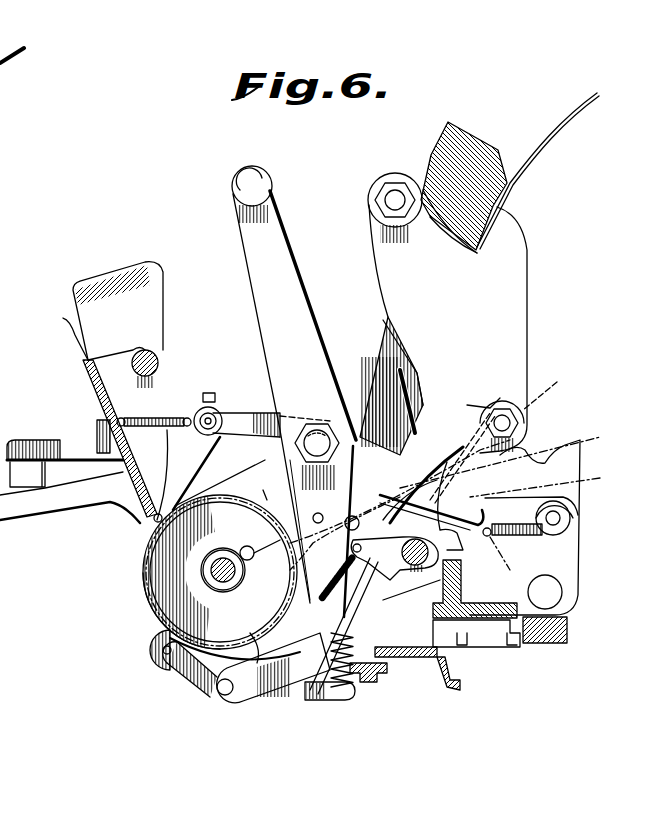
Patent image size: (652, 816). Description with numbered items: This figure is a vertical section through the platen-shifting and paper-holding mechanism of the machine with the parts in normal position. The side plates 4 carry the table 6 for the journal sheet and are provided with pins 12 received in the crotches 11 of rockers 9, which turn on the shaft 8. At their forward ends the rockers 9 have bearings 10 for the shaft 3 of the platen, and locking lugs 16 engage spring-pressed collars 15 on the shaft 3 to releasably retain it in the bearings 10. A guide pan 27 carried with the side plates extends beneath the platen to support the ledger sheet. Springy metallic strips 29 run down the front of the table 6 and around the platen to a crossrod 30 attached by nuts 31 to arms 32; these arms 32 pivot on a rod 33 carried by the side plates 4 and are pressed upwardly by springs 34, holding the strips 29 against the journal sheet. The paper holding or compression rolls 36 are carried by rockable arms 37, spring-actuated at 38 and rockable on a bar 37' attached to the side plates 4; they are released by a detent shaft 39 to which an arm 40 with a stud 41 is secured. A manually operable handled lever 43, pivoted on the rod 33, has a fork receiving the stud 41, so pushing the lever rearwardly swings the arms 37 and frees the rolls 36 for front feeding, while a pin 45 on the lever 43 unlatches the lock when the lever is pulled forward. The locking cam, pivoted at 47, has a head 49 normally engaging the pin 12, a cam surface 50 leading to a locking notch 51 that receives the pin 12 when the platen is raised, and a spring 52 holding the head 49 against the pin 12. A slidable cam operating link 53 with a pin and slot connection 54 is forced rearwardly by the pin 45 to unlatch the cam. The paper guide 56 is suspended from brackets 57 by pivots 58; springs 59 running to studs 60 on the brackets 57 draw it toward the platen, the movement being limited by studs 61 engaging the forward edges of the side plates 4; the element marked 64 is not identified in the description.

The shaft 3 is at (223, 558).
The side plates 4 is at (515, 345).
The table 6 is at (525, 158).
The shaft 8 is at (375, 615).
The rockers 9 is at (428, 447).
The bearings 10 is at (213, 550).
The crotches 11 is at (470, 406).
The pins 12 is at (540, 412).
The spring-pressed collars 15 is at (322, 558).
The locking lugs 16 is at (252, 558).
The guide pan 27 is at (200, 667).
The springy metallic strips 29 is at (280, 461).
The crossrod 30 is at (220, 413).
The nuts 31 is at (246, 436).
The arms 32 is at (272, 415).
The rod 33 is at (320, 430).
The springs 34 is at (279, 530).
The paper holding or compression rolls 36 is at (153, 663).
The rockable arms 37 is at (237, 698).
The bar 37' is at (319, 704).
The spring 38 is at (373, 645).
The detent shaft 39 is at (229, 697).
The arm 40 is at (232, 640).
The stud 41 is at (325, 701).
The manually operable handled lever 43 is at (262, 298).
The stud or pin 45 is at (313, 520).
The pivot 47 is at (562, 592).
The head 49 is at (556, 385).
The cam surface 50 is at (508, 457).
The locking hook or notch 51 is at (548, 478).
The spring 52 is at (528, 532).
The slidable cam operating link 53 is at (479, 471).
The pin and slot connection 54 is at (400, 491).
The paper guide 56 is at (75, 335).
The brackets 57 is at (60, 440).
The pivots 58 is at (158, 365).
The springs 59 is at (143, 418).
The studs 60 is at (200, 428).
The studs 61 is at (150, 520).
The plate 64 is at (147, 312).